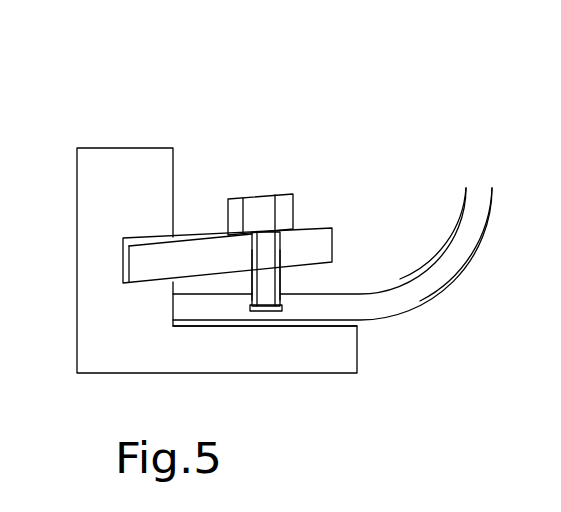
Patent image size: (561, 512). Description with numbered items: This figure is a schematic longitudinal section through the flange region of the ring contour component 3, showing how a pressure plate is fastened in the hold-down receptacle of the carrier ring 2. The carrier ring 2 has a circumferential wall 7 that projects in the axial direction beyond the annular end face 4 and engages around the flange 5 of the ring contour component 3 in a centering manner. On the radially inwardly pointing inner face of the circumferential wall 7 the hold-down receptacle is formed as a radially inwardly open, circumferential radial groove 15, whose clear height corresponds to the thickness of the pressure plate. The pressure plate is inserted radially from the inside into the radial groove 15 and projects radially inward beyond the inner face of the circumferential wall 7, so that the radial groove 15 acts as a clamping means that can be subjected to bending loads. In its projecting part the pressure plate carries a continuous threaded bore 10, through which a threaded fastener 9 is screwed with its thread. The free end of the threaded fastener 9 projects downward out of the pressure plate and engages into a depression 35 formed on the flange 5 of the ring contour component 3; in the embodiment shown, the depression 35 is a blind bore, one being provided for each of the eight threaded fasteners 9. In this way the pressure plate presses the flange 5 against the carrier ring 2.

The carrier ring 2 is at (120, 128).
The ring contour component 3 is at (465, 242).
The annular end face 4 is at (248, 328).
The flange 5 is at (320, 312).
The circumferential wall 7 is at (153, 197).
The threaded fastener 9 is at (265, 242).
The threaded bore 10 is at (282, 249).
The radial groove 15 is at (123, 262).
The depression 35 is at (267, 310).